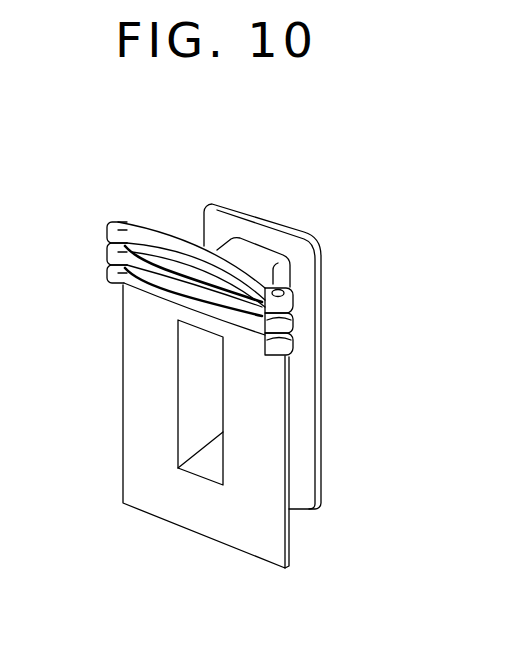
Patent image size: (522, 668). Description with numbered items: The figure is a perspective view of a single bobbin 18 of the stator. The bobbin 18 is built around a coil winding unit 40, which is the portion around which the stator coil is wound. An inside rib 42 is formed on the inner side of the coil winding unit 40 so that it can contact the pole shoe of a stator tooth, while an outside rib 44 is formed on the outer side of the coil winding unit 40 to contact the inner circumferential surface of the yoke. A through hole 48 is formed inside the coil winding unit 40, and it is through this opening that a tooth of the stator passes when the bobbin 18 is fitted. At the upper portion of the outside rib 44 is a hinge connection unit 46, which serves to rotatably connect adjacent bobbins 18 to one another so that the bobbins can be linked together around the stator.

The bobbin 18 is at (333, 430).
The coil winding unit 40 is at (252, 253).
The inside rib 42 is at (300, 382).
The outside rib 44 is at (143, 409).
The hinge connection unit 46 is at (168, 224).
The through hole 48 is at (212, 470).